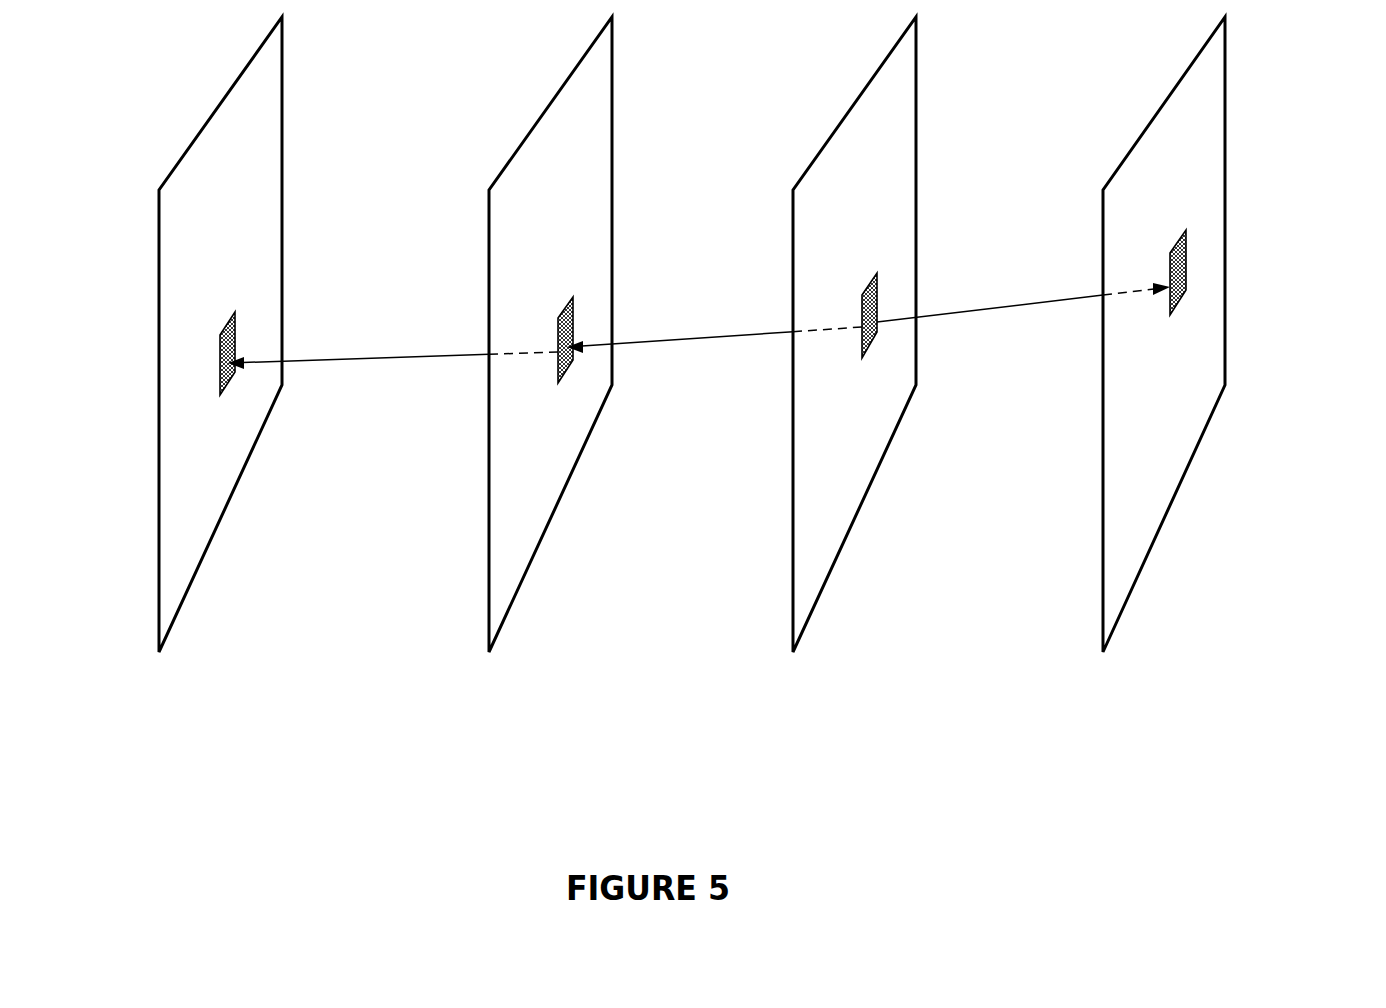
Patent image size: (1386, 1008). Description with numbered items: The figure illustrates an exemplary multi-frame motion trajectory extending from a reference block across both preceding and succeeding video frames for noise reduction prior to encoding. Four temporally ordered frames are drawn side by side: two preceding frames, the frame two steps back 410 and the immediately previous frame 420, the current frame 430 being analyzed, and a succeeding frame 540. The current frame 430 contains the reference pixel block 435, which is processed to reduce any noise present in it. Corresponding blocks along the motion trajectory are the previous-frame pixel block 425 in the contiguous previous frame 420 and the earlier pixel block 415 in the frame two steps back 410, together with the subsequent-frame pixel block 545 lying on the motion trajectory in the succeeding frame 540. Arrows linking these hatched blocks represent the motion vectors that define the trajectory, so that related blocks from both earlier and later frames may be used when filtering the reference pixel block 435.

The Frame (t-2) 410 is at (140, 704).
The Frame (t-1) 420 is at (472, 704).
The Frame (t) 430 is at (775, 704).
The Frame (t+1) 540 is at (1109, 704).
The Pixel Block (t-2) 415 is at (229, 344).
The Pixel Block (t-1) 425 is at (573, 327).
The Pixel Block (t) 435 is at (877, 305).
The Pixel Block (t+1) 545 is at (1202, 305).